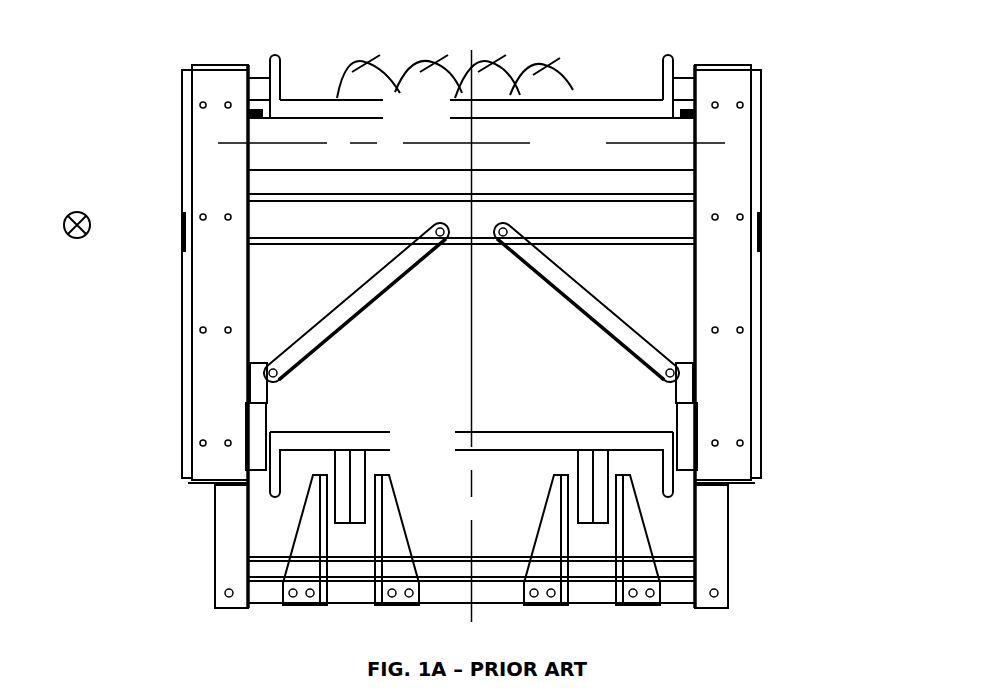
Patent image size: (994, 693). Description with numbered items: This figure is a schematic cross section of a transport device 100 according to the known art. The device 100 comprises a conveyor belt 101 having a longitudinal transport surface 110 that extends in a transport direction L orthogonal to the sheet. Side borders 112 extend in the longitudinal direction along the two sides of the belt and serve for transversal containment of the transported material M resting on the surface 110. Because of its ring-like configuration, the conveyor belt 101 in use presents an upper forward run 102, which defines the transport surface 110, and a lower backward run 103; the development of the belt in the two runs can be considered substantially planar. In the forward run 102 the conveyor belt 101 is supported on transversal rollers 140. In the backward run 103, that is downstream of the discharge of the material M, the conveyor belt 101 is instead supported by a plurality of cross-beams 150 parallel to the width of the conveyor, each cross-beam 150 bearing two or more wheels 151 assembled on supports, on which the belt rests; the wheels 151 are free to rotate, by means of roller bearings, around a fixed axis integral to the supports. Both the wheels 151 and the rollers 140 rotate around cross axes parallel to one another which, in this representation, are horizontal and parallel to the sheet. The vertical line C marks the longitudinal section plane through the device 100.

The transport device 100 is at (776, 298).
The conveyor belt 101 is at (681, 60).
The upper forward run 102 is at (434, 123).
The lower backward run 103 is at (440, 449).
The longitudinal transport surface 110 is at (512, 91).
The side borders 112 is at (268, 58).
The transversal rollers 140 is at (590, 154).
The cross-beams 150 is at (355, 567).
The wheels 151 is at (578, 462).
The section line C- C is at (471, 339).
The transport direction L is at (61, 225).
The transported material M is at (552, 78).